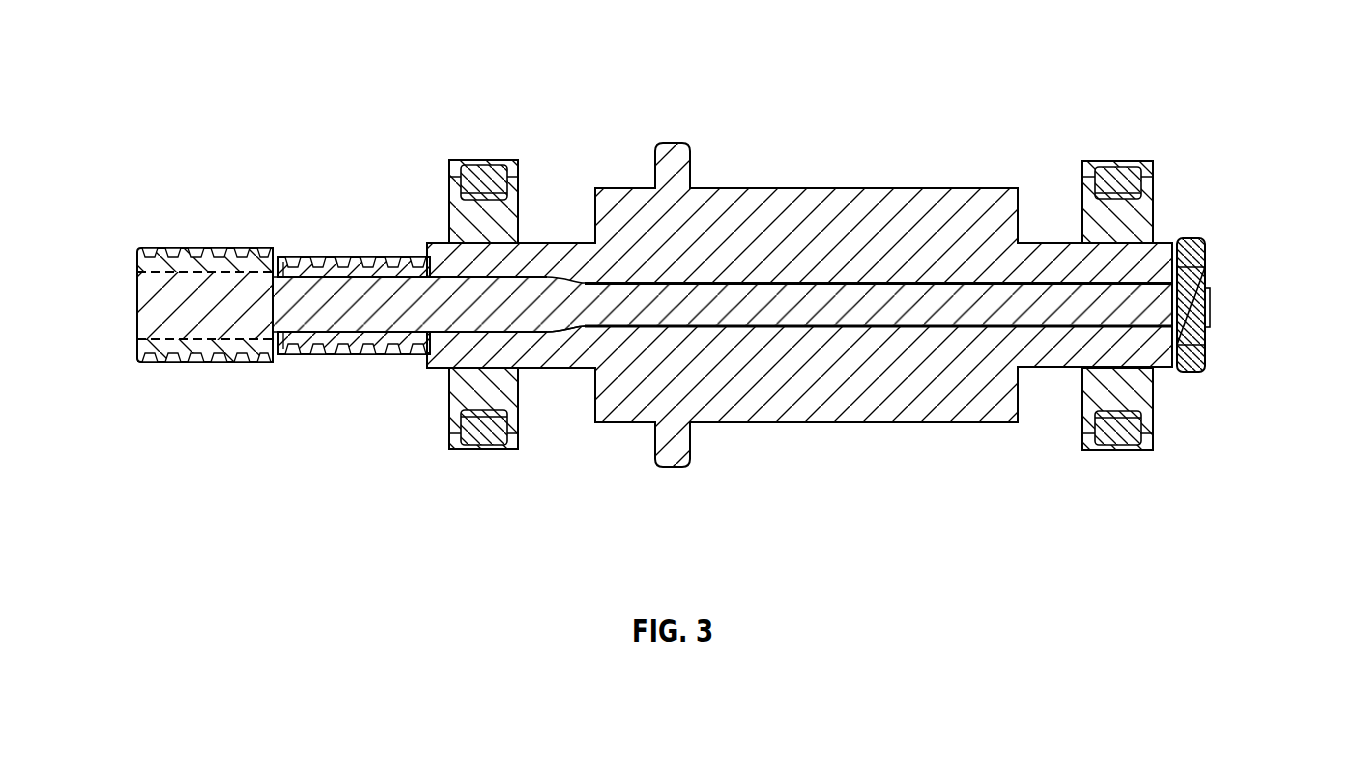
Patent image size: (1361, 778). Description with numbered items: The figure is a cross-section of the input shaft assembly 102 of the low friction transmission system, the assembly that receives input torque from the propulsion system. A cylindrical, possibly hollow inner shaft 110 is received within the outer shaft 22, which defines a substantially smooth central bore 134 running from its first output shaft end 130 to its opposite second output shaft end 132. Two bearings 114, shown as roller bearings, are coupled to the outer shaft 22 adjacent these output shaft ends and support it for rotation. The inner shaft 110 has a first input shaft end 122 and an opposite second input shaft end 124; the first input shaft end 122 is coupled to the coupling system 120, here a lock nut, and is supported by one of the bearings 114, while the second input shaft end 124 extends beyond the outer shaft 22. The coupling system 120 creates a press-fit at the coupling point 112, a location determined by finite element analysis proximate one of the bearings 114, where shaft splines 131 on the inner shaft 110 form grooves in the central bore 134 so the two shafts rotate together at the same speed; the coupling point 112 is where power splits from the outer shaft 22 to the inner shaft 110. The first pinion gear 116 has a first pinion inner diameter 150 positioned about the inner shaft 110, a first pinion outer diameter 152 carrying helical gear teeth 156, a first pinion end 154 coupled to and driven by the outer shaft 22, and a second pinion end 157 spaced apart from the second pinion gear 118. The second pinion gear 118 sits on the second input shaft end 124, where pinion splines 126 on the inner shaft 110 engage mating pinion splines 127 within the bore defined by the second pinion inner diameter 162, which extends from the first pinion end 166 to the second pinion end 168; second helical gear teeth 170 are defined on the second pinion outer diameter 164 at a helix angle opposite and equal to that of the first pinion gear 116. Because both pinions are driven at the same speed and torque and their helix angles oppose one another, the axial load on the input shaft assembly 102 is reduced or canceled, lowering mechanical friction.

The input shaft assembly 102 is at (1273, 76).
The outer shaft 22 is at (794, 184).
The coupling point 112 is at (587, 281).
The inner shaft 110 is at (993, 279).
The bearings 114 is at (482, 155).
The first pinion gear 116 is at (328, 252).
The second pinion gear 118 is at (213, 230).
The coupling system 120 is at (1168, 225).
The first input shaft end 122 is at (1206, 275).
The second input shaft end 124 is at (137, 348).
The pinion splines 126 is at (178, 360).
The mating pinion splines 127 is at (234, 264).
The first output shaft end 130 is at (1165, 370).
The shaft splines 131 is at (592, 325).
The second output shaft end 132 is at (438, 370).
The central bore 134 is at (933, 358).
The first pinion inner diameter 150 is at (322, 355).
The first pinion outer diameter 152 is at (351, 356).
The first pinion end 154 is at (427, 245).
The helical gear teeth 156 is at (406, 356).
The second pinion end 157 is at (278, 360).
The second pinion inner diameter 162 is at (217, 362).
The second pinion outer diameter 164 is at (238, 360).
The first pinion end 166 is at (262, 360).
The second pinion end 168 is at (137, 355).
The second helical gear teeth 170 is at (161, 358).